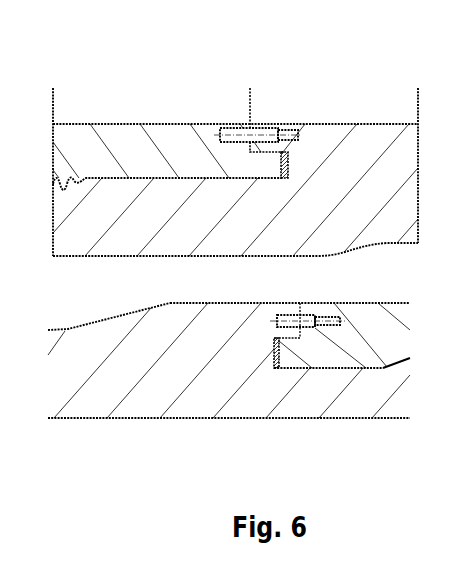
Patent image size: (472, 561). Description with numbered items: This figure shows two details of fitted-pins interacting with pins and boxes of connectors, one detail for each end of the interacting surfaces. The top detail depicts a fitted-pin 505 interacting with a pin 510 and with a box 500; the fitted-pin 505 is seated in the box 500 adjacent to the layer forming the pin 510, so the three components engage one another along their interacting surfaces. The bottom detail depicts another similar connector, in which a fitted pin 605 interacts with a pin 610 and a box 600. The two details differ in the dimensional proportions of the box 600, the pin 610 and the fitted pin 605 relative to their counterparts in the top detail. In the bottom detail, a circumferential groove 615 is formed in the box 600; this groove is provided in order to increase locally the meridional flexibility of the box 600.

The box 500 is at (382, 124).
The fitted-pin 505 is at (235, 124).
The pin 510 is at (112, 124).
The box 600 is at (343, 303).
The fitted pin 605 is at (283, 315).
The pin 610 is at (90, 325).
The circumferential groove 615 is at (392, 352).